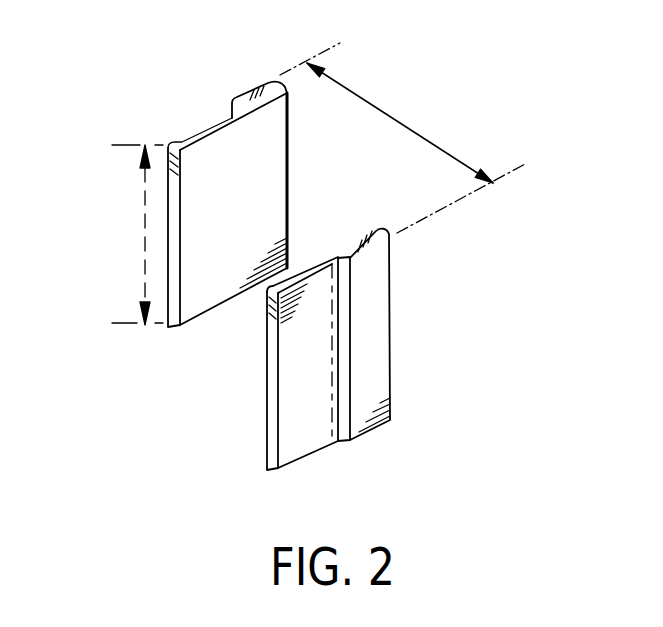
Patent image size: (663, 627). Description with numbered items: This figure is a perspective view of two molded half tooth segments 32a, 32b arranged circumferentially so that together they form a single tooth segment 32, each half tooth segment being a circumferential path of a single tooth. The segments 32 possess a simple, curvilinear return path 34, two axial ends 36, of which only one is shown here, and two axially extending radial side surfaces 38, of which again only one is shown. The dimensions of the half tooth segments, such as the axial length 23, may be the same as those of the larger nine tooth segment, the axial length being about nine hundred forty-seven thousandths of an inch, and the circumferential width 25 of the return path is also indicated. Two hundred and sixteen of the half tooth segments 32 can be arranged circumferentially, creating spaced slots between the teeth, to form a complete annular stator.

The axial length 23 is at (145, 232).
The circumferential width 25 is at (480, 172).
The single tooth segment 32 is at (490, 356).
The half tooth segment 32a is at (212, 127).
The half tooth segment 32b is at (226, 455).
The curvilinear return path 34 is at (407, 318).
The axial end 36 is at (247, 98).
The axially extending radial side surface 38 is at (370, 389).